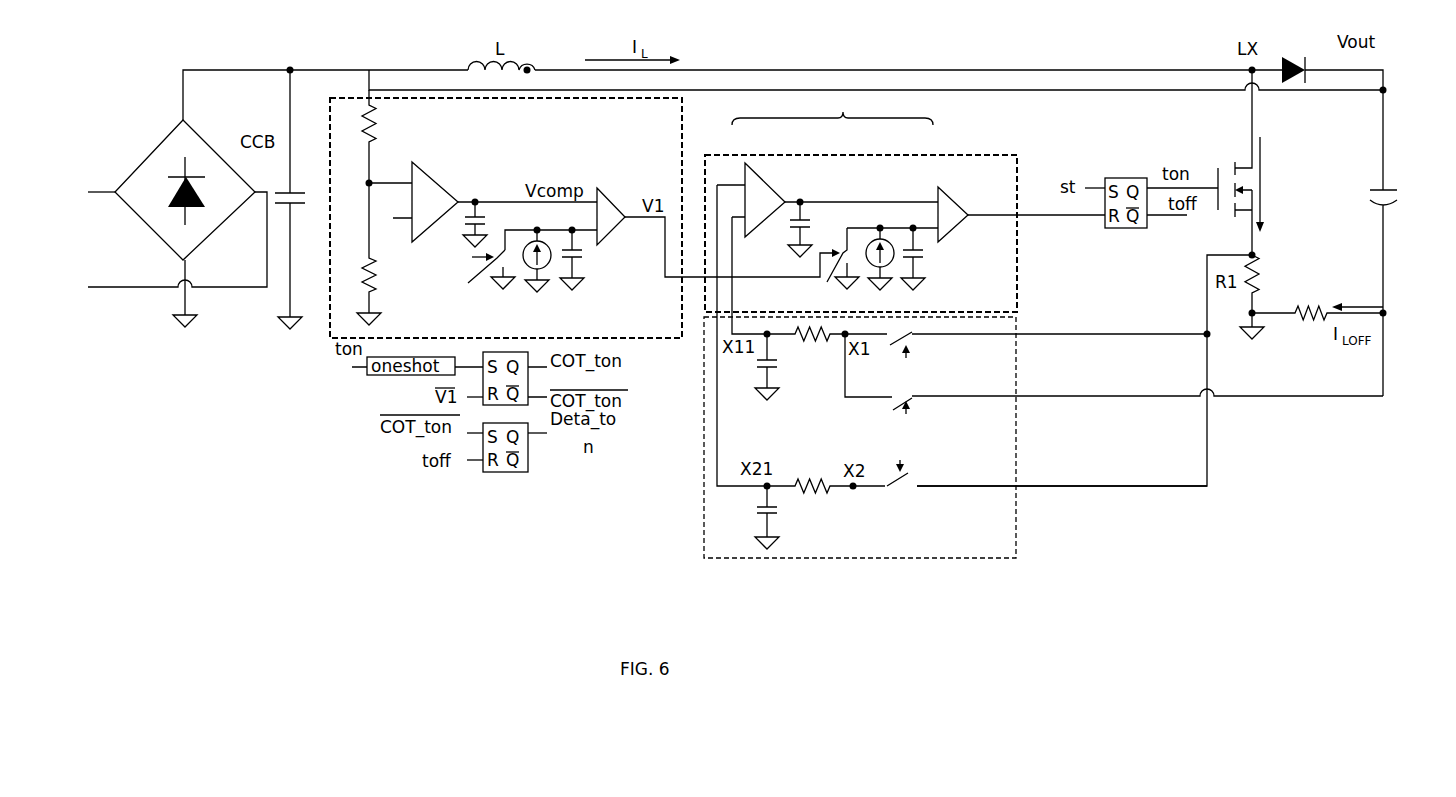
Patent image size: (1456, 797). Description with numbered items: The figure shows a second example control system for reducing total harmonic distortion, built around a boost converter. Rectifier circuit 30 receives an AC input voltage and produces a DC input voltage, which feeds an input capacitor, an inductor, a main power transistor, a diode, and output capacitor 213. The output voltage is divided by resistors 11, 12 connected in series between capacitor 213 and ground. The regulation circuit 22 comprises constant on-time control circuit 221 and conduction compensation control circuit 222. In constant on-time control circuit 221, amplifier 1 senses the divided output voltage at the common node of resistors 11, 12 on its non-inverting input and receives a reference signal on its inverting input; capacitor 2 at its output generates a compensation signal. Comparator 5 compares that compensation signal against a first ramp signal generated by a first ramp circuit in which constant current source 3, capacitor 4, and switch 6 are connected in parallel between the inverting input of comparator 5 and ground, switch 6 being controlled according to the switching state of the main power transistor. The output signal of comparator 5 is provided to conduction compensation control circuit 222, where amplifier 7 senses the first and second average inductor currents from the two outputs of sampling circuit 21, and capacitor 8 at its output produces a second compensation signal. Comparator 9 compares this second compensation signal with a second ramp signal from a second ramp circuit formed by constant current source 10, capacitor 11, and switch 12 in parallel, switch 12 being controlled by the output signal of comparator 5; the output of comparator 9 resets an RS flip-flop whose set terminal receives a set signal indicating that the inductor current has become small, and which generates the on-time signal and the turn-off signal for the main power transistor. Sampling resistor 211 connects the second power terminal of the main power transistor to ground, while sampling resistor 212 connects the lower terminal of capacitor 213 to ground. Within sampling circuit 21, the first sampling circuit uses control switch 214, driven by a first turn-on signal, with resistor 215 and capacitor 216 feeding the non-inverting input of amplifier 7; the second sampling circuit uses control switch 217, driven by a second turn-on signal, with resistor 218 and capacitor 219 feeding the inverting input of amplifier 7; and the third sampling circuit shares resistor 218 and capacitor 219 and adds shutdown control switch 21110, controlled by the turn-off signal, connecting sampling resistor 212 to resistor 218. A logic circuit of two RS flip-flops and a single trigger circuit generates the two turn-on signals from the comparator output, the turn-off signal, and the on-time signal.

The rectifier circuit 30 is at (167, 132).
The amplifier 1 is at (433, 177).
The capacitor 2 is at (507, 190).
The constant current source 3 is at (547, 268).
The capacitor 4 is at (583, 257).
The comparator 5 is at (617, 190).
The switch 6 is at (476, 280).
The amplifier 7 is at (768, 187).
The capacitor 8 is at (810, 227).
The comparator 9 is at (947, 187).
The constant current source 10 is at (885, 265).
The resistor / capacitor 11 is at (952, 263).
The resistor / switch 12 is at (608, 254).
The regulation circuit 22 is at (832, 111).
The constant on-time control circuit 221 is at (682, 123).
The conduction compensation control circuit 222 is at (880, 155).
The sampling circuit 21 is at (1016, 455).
The sampling resistor 211 is at (1252, 255).
The sampling resistor 212 is at (1305, 327).
The capacitor 213 is at (1392, 188).
The control switch 214 is at (900, 498).
The resistor 215 is at (823, 453).
The capacitor 216 is at (778, 507).
The control switch 217 is at (913, 342).
The resistor 218 is at (817, 350).
The capacitor 219 is at (752, 363).
The shutdown control switch 21110 is at (923, 407).